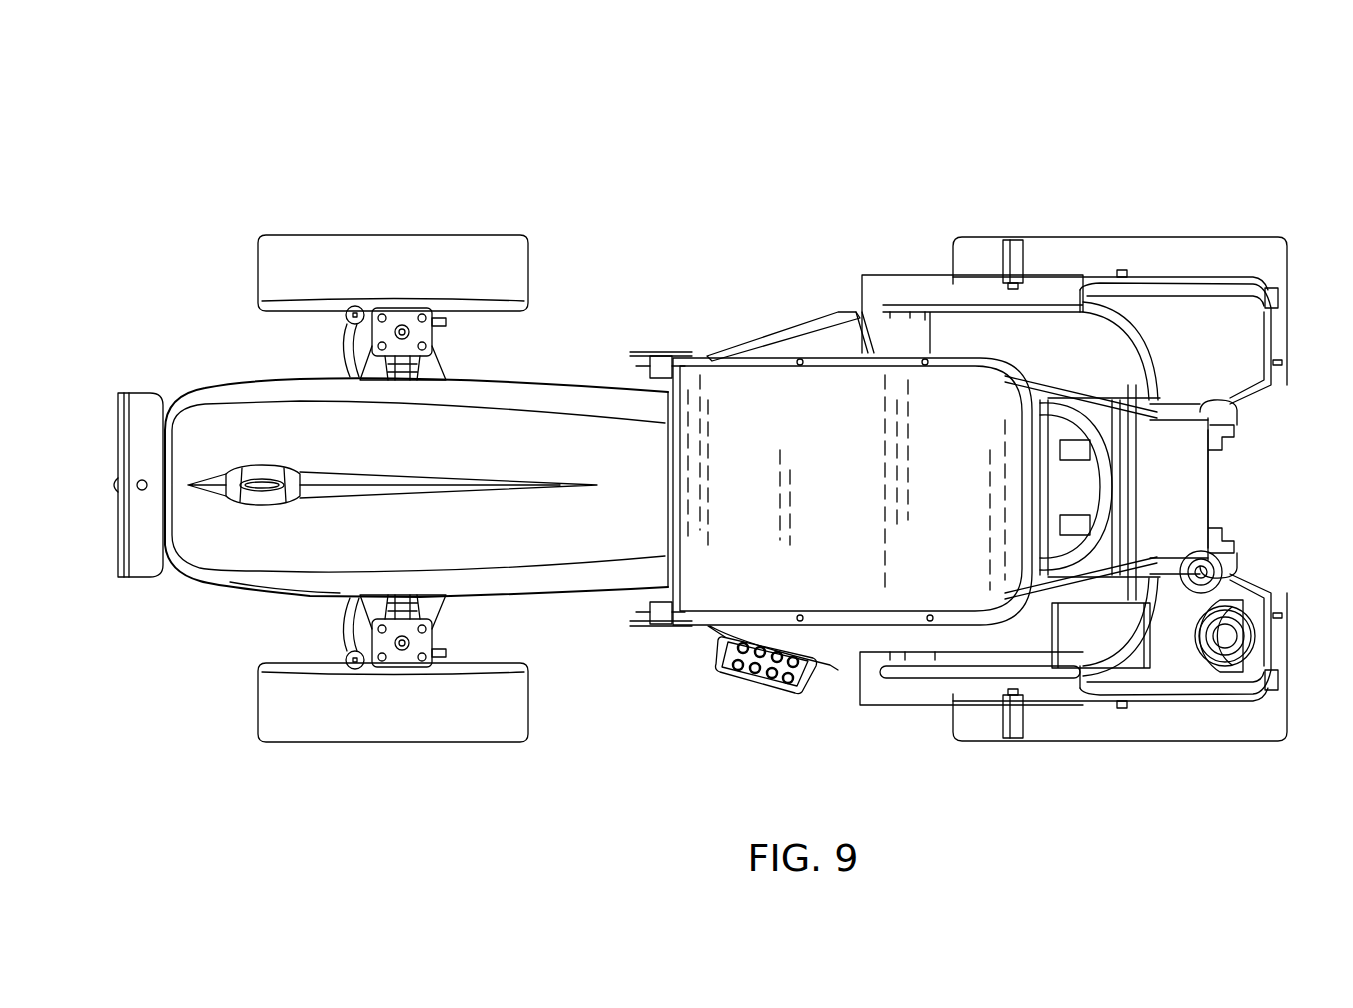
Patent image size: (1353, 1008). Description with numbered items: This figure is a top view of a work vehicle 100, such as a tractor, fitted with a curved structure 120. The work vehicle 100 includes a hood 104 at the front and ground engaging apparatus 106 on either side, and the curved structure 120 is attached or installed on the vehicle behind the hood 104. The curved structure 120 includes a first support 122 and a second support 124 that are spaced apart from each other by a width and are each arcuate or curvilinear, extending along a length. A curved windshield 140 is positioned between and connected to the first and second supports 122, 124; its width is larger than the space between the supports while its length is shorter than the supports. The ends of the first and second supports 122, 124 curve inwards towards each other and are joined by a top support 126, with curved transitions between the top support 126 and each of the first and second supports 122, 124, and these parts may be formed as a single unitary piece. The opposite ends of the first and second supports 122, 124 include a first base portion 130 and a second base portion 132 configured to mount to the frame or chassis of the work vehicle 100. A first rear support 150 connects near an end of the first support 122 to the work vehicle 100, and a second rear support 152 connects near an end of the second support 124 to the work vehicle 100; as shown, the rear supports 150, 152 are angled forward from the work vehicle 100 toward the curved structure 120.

The work vehicle 100 is at (372, 103).
The hood 104 is at (285, 440).
The ground engaging apparatus 106 is at (347, 243).
The curved structure 120 is at (753, 297).
The first support 122 is at (880, 620).
The second support 124 is at (822, 358).
The top support 126 is at (1033, 483).
The first base portion 130 is at (655, 633).
The second base portion 132 is at (653, 353).
The windshield 140 is at (852, 428).
The first rear support 150 is at (1079, 583).
The second rear support 152 is at (1050, 390).